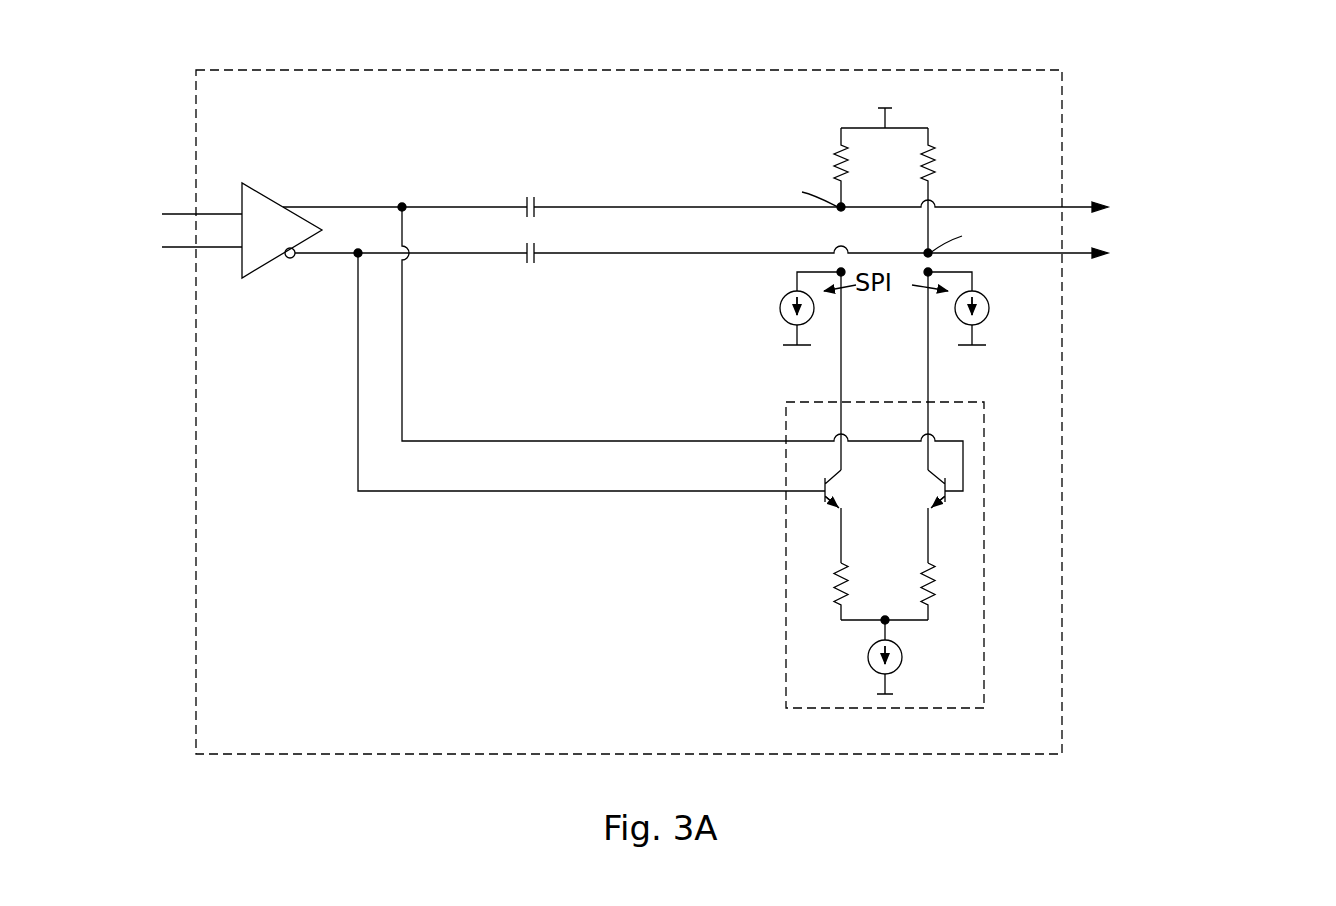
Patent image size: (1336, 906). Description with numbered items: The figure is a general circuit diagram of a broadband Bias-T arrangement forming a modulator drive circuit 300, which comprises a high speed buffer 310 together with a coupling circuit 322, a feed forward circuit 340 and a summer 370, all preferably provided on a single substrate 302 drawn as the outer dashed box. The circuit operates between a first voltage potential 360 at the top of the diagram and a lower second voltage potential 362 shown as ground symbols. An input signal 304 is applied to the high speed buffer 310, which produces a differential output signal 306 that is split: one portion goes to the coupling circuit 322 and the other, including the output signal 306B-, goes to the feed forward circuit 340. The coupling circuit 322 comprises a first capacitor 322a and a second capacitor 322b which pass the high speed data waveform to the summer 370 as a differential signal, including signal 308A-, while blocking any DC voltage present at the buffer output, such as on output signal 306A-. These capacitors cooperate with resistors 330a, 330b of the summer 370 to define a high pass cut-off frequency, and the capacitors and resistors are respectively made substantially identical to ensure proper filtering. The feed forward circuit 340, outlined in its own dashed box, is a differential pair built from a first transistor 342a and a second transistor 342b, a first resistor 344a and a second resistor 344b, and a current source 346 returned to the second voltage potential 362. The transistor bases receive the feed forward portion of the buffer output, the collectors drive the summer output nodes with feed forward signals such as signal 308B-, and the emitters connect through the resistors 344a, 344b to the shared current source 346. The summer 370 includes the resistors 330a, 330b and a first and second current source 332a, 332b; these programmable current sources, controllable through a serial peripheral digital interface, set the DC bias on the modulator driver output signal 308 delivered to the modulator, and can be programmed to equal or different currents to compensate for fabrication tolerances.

The modulator drive circuit 300 is at (340, 70).
The single substrate 302 is at (262, 134).
The input signal 304 is at (128, 228).
The differential output signal 306 is at (328, 264).
The output signal 306A- is at (418, 256).
The output signal 306B- is at (567, 492).
The modulator driver output signal 308 is at (1157, 184).
The differential signal 308A- is at (708, 255).
The signal 308B- is at (928, 373).
The high speed buffer 310 is at (268, 193).
The coupling circuit 322 is at (543, 204).
The first capacitor 322a is at (520, 207).
The second capacitor 322b is at (520, 258).
The first resistor 330a is at (838, 151).
The second resistor 330b is at (933, 152).
The first current source 332a is at (783, 301).
The second current source 332b is at (986, 297).
The feed forward circuit 340 is at (918, 555).
The first transistor 342a is at (838, 486).
The second transistor 342b is at (927, 498).
The first resistor 344a is at (843, 573).
The second resistor 344b is at (924, 580).
The current source 346 is at (870, 643).
The first voltage potential 360 is at (887, 108).
The second voltage potential 362 is at (792, 347).
The summer 370 is at (946, 222).